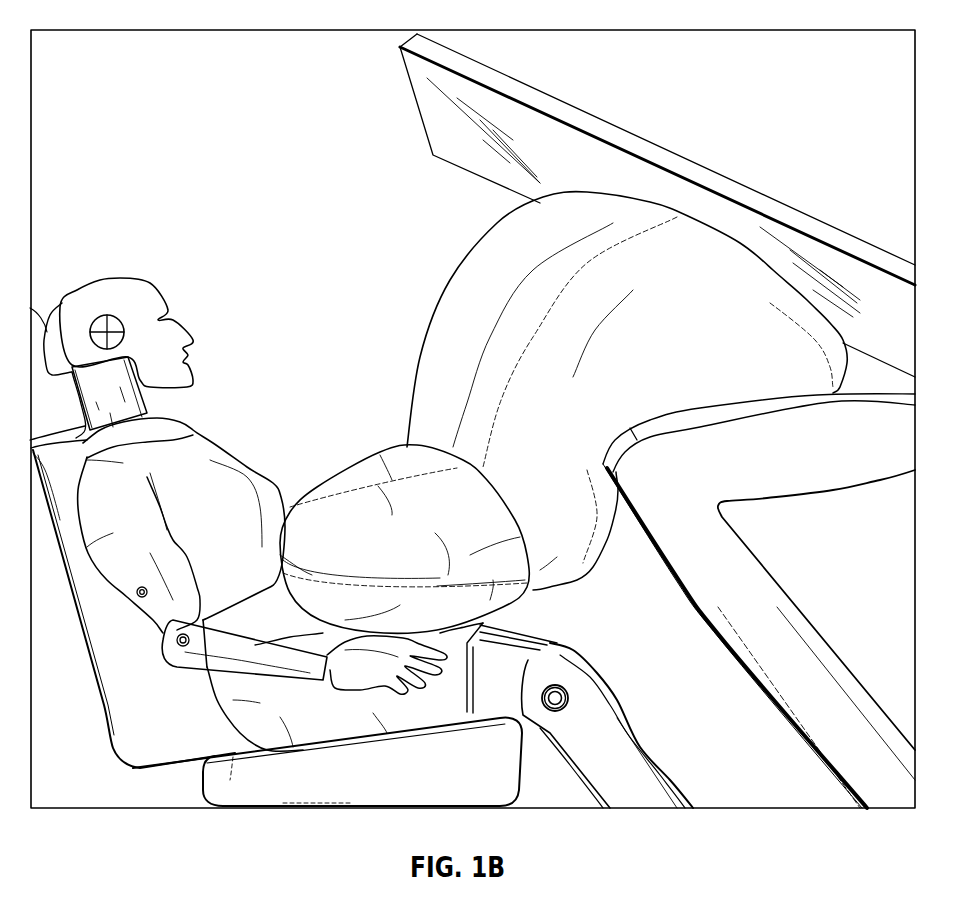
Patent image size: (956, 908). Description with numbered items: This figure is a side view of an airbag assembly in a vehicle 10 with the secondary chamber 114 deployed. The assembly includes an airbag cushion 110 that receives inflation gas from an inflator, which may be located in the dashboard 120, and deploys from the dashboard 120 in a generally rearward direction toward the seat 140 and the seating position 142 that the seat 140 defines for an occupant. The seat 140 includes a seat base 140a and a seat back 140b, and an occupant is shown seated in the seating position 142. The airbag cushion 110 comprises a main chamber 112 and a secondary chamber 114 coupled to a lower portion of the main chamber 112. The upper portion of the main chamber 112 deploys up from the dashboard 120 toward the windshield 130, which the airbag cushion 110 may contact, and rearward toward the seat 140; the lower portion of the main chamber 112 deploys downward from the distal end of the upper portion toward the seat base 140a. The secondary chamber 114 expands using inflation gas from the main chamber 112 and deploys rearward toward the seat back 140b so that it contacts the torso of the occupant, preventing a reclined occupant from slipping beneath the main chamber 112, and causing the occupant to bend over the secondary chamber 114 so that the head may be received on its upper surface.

The vehicle 10 is at (185, 170).
The airbag cushion 110 is at (430, 266).
The main chamber 112 is at (510, 232).
The secondary chamber 114 is at (395, 462).
The dashboard 120 is at (660, 508).
The windshield 130 is at (438, 118).
The seat 140 is at (276, 556).
The seat base 140a is at (411, 788).
The seat back 140b is at (181, 715).
The seating position 142 is at (257, 438).